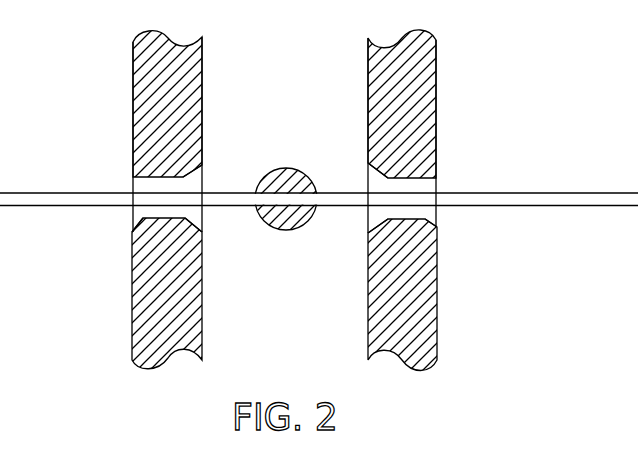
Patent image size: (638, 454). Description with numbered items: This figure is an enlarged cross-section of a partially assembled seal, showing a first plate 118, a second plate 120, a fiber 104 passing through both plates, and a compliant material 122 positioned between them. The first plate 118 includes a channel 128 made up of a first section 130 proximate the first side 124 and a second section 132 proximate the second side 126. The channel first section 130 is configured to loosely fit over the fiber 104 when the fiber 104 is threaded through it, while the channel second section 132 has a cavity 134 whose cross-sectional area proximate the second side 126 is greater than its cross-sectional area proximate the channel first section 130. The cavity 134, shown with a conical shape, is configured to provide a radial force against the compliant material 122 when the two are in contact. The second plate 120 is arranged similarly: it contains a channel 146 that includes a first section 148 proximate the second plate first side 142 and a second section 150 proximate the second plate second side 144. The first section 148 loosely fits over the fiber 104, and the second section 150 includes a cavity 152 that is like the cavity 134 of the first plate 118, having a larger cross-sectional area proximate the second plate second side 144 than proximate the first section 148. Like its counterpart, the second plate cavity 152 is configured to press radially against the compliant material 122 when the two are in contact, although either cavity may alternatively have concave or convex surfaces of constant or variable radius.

The fiber 104 is at (532, 198).
The first plate 118 is at (431, 115).
The second plate 120 is at (137, 98).
The compliant material 122 is at (290, 173).
The first side 124 is at (438, 65).
The second side 126 is at (367, 73).
The channel 128 is at (397, 212).
The first section 130 is at (432, 220).
The second section 132 is at (381, 218).
The cavity 134 is at (377, 181).
The second plate first side 142 is at (131, 50).
The second plate second side 144 is at (203, 62).
The channel 146 is at (173, 214).
The first section 148 is at (142, 218).
The second section 150 is at (190, 218).
The cavity 152 is at (196, 180).